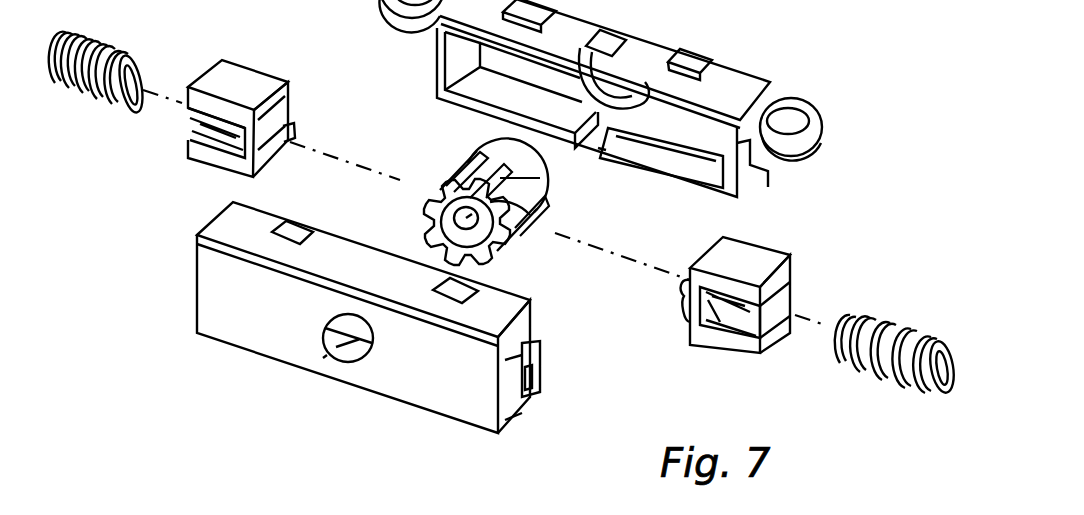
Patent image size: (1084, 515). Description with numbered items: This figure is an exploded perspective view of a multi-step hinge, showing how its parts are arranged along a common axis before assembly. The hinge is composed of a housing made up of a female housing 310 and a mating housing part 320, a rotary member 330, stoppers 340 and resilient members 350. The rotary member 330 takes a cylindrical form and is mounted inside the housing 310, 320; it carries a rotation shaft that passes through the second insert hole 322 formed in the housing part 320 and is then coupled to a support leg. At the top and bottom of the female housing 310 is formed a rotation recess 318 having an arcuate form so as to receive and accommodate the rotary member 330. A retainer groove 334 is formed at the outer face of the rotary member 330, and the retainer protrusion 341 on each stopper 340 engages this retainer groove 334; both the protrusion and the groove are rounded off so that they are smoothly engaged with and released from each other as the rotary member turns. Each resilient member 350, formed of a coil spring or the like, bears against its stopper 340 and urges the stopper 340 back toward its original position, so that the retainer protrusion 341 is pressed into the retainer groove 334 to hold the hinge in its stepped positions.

The female housing 310 is at (737, 80).
The rotation recess 318 is at (589, 160).
The housing 320 is at (243, 323).
The second insert hole 322 is at (343, 352).
The rotary member 330 is at (505, 255).
The retainer groove 334 is at (455, 183).
The stopper 340 is at (244, 75).
The retainer protrusion 341 is at (289, 132).
The resilient member 350 is at (92, 104).